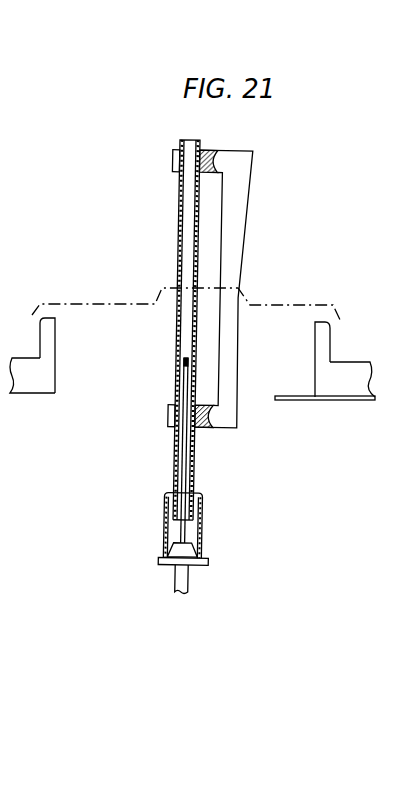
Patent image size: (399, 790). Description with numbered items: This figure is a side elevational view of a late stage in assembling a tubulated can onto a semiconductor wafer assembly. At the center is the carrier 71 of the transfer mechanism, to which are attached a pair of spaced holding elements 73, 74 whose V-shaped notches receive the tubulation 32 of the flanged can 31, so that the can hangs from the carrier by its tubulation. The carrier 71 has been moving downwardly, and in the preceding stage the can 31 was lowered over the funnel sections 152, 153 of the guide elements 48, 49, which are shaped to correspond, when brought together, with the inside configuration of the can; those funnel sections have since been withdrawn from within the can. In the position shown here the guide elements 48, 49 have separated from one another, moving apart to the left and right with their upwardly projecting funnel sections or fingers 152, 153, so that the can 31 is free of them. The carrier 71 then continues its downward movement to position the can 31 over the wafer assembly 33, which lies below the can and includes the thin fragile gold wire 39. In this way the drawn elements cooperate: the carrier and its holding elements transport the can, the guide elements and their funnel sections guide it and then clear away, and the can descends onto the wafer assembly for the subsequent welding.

The flanged can 31 is at (196, 521).
The tubulation 32 is at (178, 358).
The wafer assembly 33 is at (195, 573).
The gold wire 39 is at (185, 450).
The guide element 48 is at (38, 380).
The guide element 49 is at (345, 385).
The carrier 71 is at (229, 256).
The holding element 73 is at (220, 428).
The holding element 74 is at (221, 158).
The funnel section 152 is at (51, 337).
The funnel section 153 is at (315, 343).